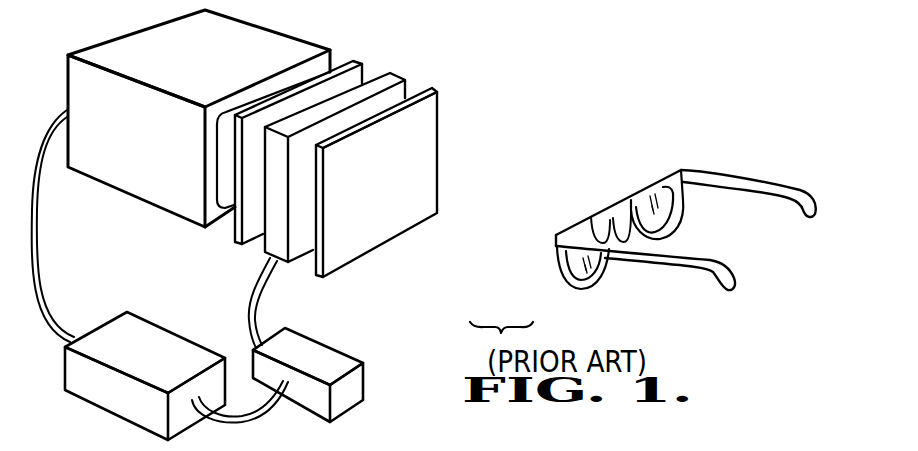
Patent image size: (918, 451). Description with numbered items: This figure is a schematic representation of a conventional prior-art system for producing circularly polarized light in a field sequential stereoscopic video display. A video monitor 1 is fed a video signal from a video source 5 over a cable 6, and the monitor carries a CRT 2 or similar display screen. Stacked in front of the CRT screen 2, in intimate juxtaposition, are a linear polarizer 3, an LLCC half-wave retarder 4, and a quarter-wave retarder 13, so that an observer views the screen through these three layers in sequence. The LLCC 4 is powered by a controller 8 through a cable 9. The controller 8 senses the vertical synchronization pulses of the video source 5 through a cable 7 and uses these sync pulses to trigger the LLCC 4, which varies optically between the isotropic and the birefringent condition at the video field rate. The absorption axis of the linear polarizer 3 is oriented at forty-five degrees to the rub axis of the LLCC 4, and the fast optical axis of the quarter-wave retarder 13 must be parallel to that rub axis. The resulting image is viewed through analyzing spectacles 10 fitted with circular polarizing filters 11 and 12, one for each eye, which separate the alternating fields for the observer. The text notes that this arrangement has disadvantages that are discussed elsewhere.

The video monitor 1 is at (290, 47).
The CRT 2 is at (300, 78).
The linear polarizer 3 is at (361, 63).
The LLCC half-wave retarder 4 is at (398, 74).
The video source 5 is at (135, 316).
The cable 6 is at (37, 241).
The cable 7 is at (245, 422).
The controller 8 is at (327, 348).
The cable 9 is at (253, 286).
The analyzing spectacles 10 is at (722, 175).
The circular polarizing filter 11 is at (593, 230).
The circular polarizing filter 12 is at (668, 195).
The quarter-wave retarder 13 is at (435, 92).